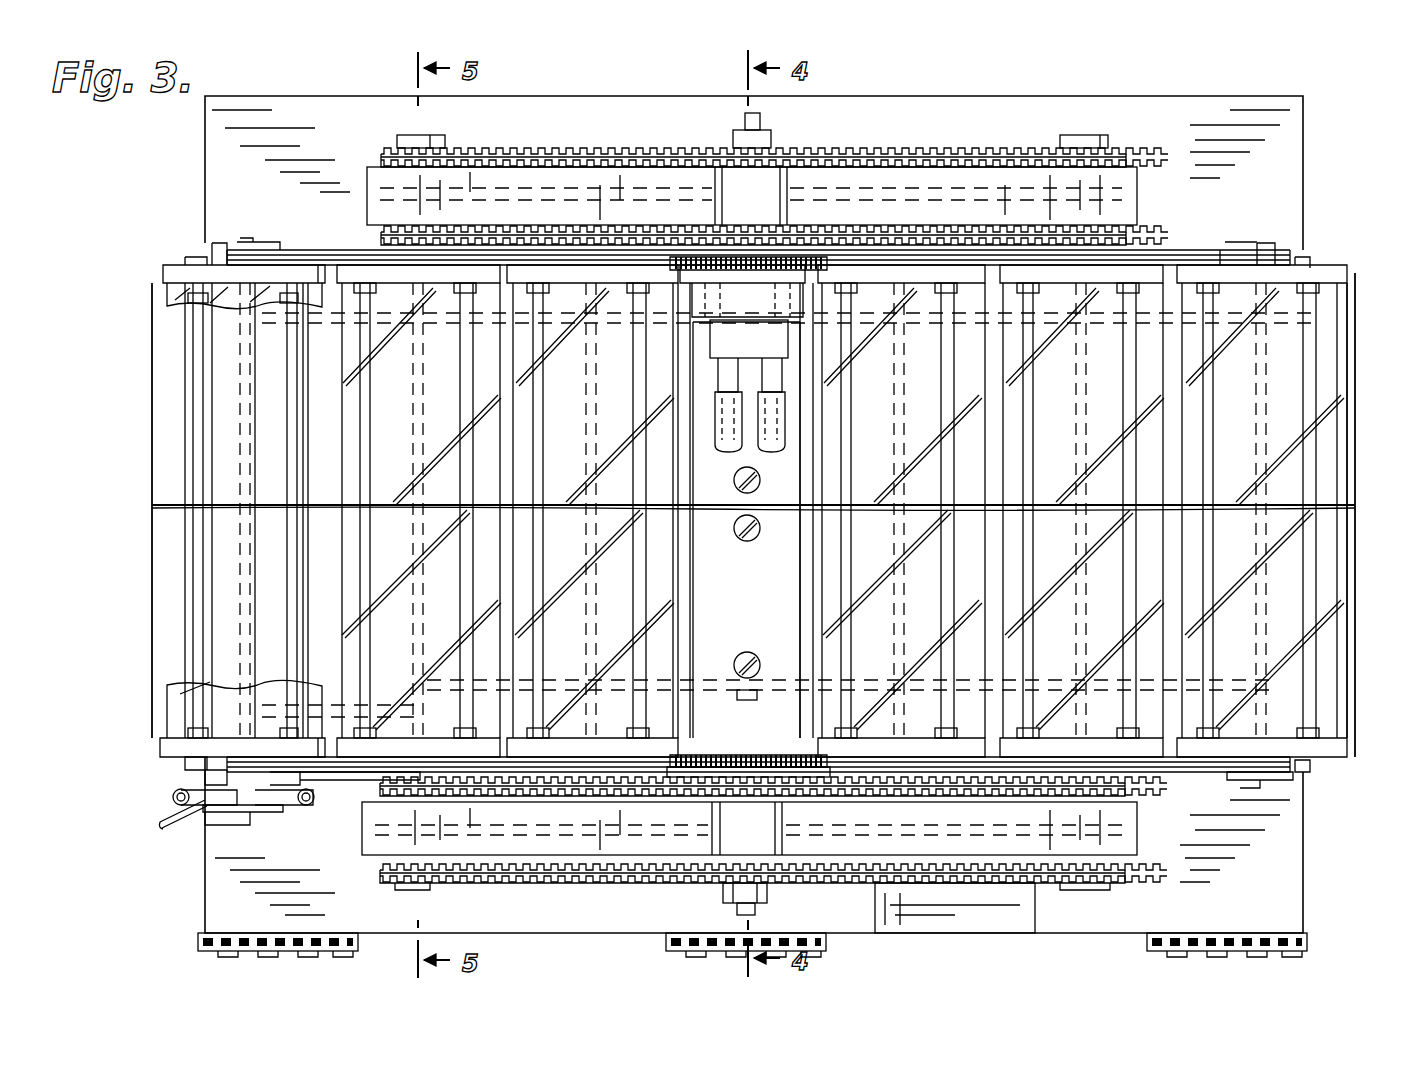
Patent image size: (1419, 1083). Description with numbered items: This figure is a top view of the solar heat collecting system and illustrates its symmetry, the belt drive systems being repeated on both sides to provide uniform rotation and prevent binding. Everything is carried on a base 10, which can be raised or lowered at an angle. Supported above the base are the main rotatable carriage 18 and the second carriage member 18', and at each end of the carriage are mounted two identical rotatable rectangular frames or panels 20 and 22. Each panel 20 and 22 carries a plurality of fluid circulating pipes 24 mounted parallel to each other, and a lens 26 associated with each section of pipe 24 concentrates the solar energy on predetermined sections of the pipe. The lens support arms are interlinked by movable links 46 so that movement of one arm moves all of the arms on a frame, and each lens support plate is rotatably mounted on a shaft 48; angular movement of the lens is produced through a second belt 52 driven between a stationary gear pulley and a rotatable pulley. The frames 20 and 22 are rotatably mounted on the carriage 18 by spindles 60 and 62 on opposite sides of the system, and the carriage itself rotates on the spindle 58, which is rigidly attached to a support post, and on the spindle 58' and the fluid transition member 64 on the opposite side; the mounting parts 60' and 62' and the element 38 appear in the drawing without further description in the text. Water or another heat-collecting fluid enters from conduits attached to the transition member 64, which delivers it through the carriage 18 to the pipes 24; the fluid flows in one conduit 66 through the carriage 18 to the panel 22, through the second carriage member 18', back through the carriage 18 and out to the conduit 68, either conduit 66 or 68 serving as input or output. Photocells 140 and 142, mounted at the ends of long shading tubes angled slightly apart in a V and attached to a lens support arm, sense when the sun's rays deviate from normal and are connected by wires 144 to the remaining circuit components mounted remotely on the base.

The base 10 is at (1292, 177).
The main rotatable carriage 18 is at (777, 195).
The second carriage member 18' is at (782, 828).
The rotatable rectangular frame or panel 20 is at (163, 640).
The rotatable rectangular frame or panel 22 is at (1352, 676).
The fluid circulating pipes 24 is at (238, 430).
The lens 26 is at (160, 330).
The drive block 38 is at (780, 883).
The movable links 46 is at (327, 772).
The shaft 48 is at (213, 780).
The second belt 52 is at (968, 790).
The spindle 58 is at (700, 910).
The spindle 58' is at (777, 122).
The spindle 60 is at (391, 899).
The upper left rack end 60' is at (440, 122).
The spindle 62 is at (1094, 902).
The upper right rack end 62' is at (1107, 123).
The transition member 64 is at (727, 353).
The conduit 66 is at (730, 452).
The conduit 68 is at (780, 452).
The photocell 140 is at (173, 797).
The photocell 142 is at (258, 810).
The wires 144 is at (160, 822).